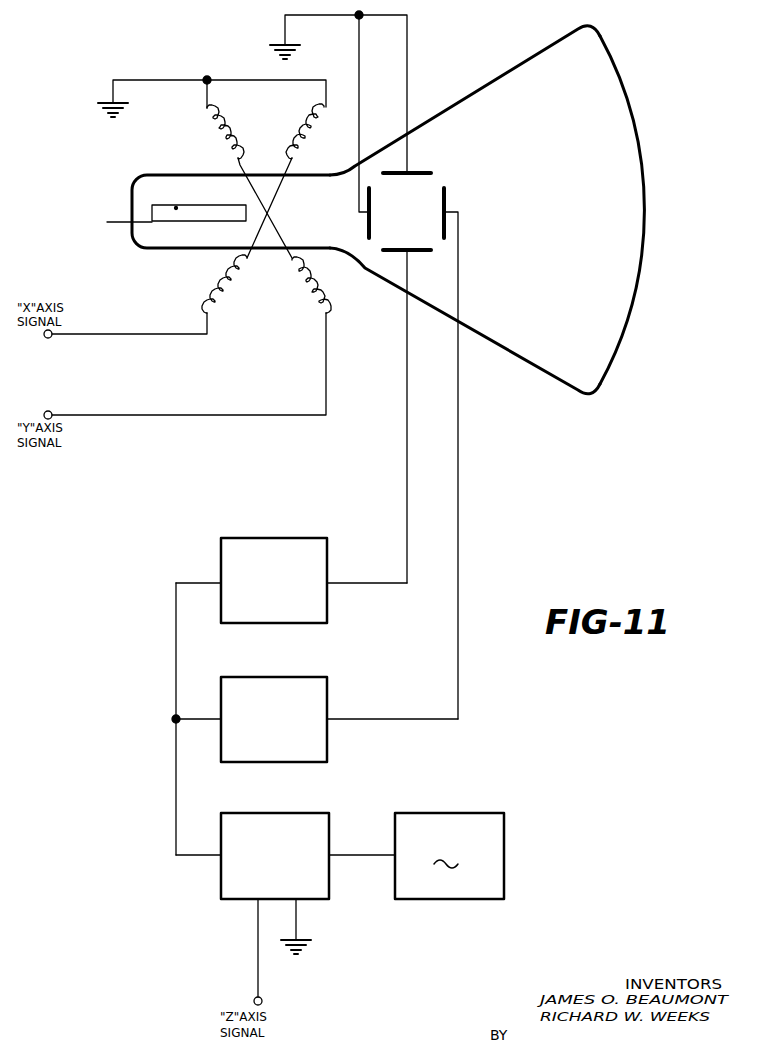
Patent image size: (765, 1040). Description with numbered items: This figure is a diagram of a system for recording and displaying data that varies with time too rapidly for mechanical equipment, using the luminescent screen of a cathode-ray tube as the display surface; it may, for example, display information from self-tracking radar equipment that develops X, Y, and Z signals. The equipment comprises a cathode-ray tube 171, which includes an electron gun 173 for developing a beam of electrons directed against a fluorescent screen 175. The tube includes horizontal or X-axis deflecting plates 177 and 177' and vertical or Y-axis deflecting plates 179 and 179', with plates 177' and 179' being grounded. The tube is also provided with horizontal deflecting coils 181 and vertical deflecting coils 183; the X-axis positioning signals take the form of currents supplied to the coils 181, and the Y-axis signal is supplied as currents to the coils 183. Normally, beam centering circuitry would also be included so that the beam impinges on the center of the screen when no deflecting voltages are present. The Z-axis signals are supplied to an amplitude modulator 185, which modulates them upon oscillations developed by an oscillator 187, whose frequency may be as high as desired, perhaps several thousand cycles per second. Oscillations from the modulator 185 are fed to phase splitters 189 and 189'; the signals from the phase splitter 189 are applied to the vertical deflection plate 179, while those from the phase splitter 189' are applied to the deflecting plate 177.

The cathode-ray tube 171 is at (516, 86).
The electron gun 173 is at (176, 208).
The fluorescent screen 175 is at (641, 193).
The horizontal or X-axis deflecting plate 177 is at (465, 453).
The horizontal or X-axis deflecting plate 177' is at (347, 213).
The vertical or Y-axis deflecting plate 179 is at (416, 416).
The vertical or Y-axis deflecting plate 179' is at (418, 158).
The horizontal deflecting coils 181 is at (300, 134).
The vertical deflecting coils 183 is at (296, 291).
The amplitude modulator 185 is at (283, 815).
The oscillator 187 is at (453, 815).
The phase splitter 189 is at (291, 564).
The phase splitter 189' is at (317, 704).